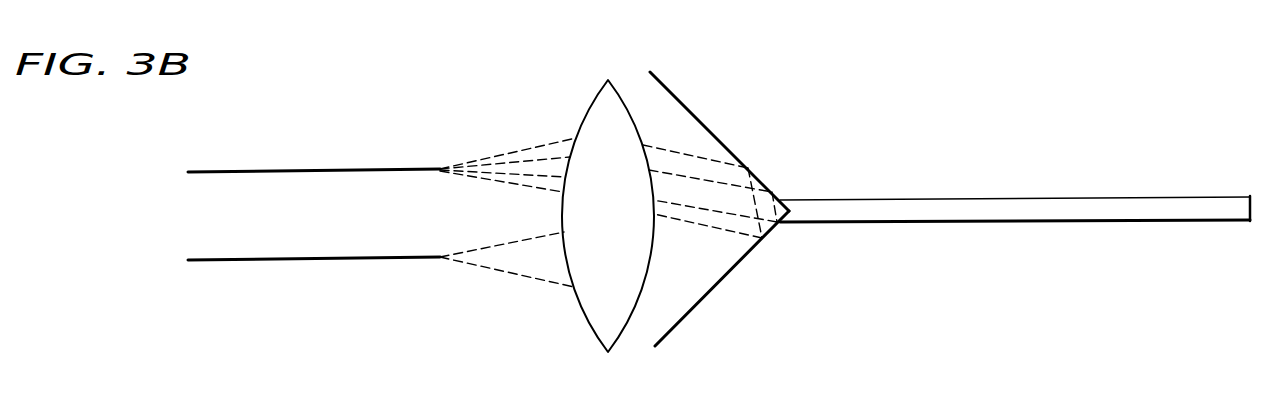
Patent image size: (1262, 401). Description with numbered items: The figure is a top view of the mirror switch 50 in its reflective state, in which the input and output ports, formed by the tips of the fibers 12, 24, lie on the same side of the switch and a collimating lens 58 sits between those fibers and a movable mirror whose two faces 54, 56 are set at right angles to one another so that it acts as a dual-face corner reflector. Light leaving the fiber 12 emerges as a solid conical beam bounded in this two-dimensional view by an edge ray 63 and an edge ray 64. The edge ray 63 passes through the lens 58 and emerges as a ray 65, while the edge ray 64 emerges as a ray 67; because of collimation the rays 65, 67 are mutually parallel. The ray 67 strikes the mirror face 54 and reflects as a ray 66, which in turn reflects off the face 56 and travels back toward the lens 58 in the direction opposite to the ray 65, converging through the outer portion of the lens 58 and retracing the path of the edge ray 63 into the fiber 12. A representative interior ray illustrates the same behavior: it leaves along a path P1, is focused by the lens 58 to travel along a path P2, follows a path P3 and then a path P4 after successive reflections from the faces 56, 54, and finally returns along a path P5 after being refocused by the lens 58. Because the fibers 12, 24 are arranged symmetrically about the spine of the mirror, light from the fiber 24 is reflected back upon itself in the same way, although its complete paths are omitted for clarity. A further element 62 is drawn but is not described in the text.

The fiber 12 is at (234, 168).
The fiber 24 is at (267, 262).
The mirror switch 50 is at (918, 126).
The mirror face 54 is at (700, 300).
The mirror face 56 is at (656, 79).
The collimating lens 58 is at (621, 226).
The third optical fiber 62 is at (908, 212).
The edge ray 63 is at (537, 143).
The edge ray 64 is at (488, 178).
The ray 65 is at (680, 152).
The ray 66 is at (750, 202).
The ray 67 is at (722, 230).
The path P1 is at (498, 162).
The path P2 is at (703, 178).
The path P3 is at (782, 198).
The path P4 is at (745, 240).
The path P5 is at (530, 178).